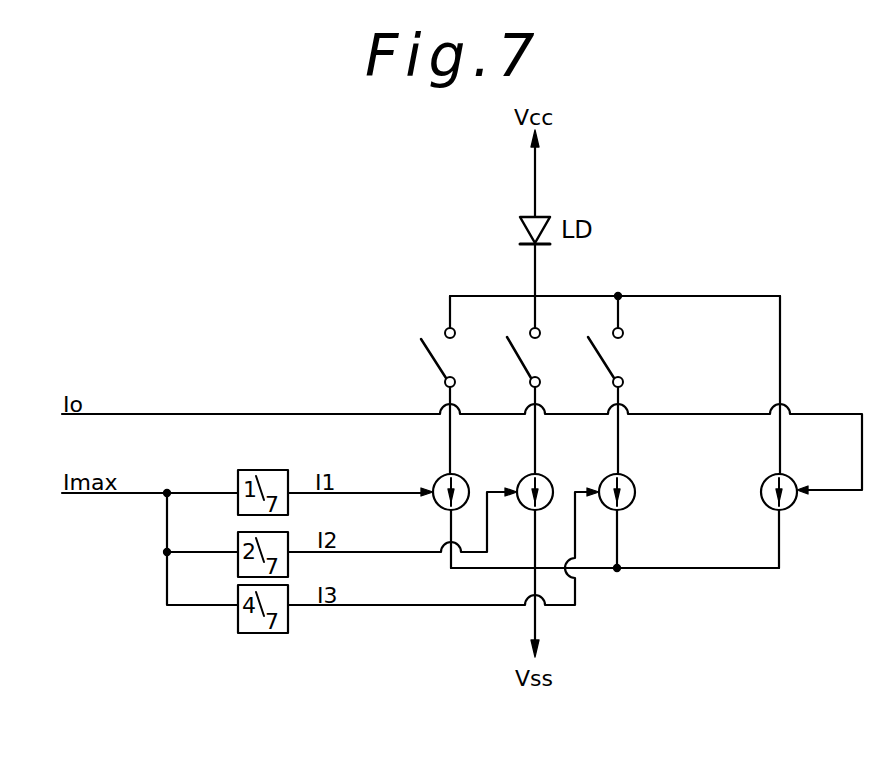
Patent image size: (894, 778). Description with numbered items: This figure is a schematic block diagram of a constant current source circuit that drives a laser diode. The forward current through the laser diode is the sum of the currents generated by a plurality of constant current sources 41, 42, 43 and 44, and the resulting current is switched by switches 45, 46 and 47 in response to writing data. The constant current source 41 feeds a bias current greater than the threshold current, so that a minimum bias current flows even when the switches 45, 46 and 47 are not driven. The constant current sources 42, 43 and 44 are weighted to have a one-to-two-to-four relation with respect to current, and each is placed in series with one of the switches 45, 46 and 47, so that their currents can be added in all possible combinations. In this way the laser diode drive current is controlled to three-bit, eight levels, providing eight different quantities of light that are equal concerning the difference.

The constant current source 41 is at (796, 503).
The constant current source 42 is at (445, 510).
The constant current source 43 is at (527, 509).
The constant current source 44 is at (632, 506).
The switch 45 is at (427, 349).
The switch 46 is at (532, 358).
The switch 47 is at (615, 356).